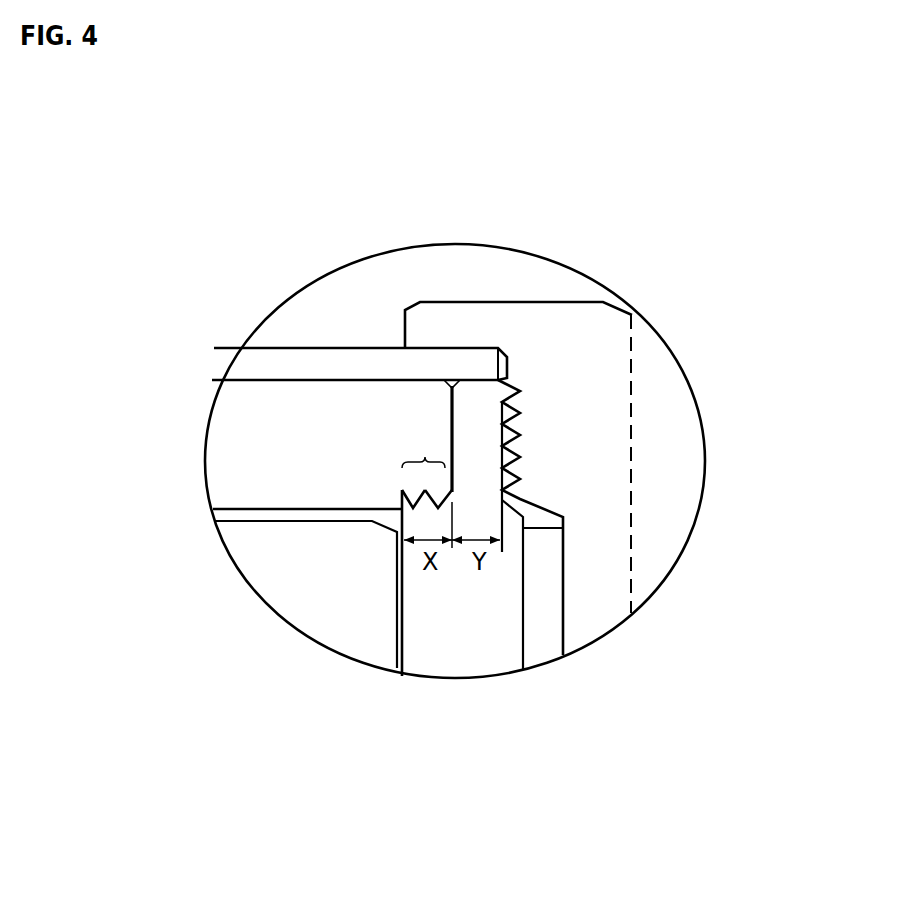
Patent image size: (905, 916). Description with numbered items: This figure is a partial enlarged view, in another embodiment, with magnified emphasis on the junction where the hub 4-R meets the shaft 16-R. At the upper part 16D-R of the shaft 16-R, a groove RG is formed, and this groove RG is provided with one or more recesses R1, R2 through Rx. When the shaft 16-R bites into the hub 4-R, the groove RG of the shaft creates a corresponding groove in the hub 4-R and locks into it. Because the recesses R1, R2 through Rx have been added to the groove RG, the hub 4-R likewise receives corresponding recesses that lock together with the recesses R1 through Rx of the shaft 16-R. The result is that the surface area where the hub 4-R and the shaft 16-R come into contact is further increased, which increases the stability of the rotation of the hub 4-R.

The hub 4-R is at (228, 413).
The shaft 16-R is at (458, 648).
The upper part of the shaft 16D-R is at (480, 472).
The groove of the shaft RG is at (425, 457).
The first recess R1 is at (415, 492).
The second recess R2 is at (440, 493).
The x-th recess Rx is at (252, 488).